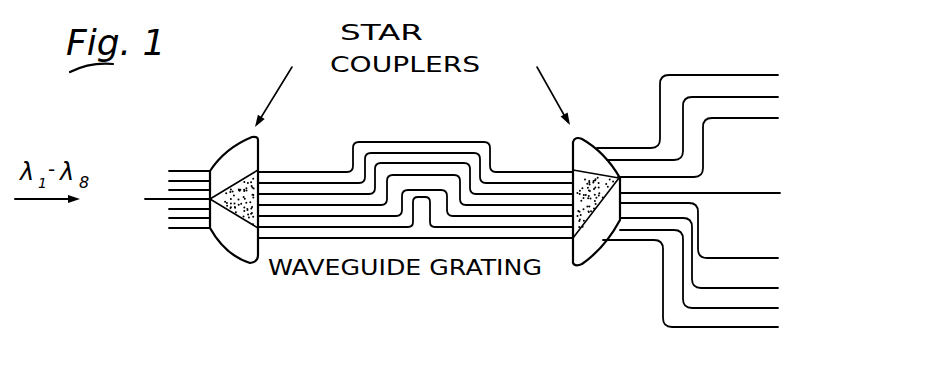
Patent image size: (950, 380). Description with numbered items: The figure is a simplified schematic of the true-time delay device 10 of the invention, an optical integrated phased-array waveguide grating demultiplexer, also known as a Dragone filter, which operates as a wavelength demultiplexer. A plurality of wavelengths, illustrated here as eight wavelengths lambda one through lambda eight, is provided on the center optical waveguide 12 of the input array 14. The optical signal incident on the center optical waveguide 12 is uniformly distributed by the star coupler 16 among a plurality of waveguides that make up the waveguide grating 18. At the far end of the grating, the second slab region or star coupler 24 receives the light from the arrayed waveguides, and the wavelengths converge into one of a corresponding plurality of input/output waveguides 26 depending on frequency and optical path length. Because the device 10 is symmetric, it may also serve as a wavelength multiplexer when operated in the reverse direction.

The true-time delay device 10 is at (596, 86).
The center optical waveguide 12 is at (144, 199).
The input array 14 is at (149, 152).
The star coupler 16 is at (240, 247).
The waveguide grating 18 is at (563, 287).
The star coupler 24 is at (600, 247).
The input/output waveguides 26 is at (845, 67).